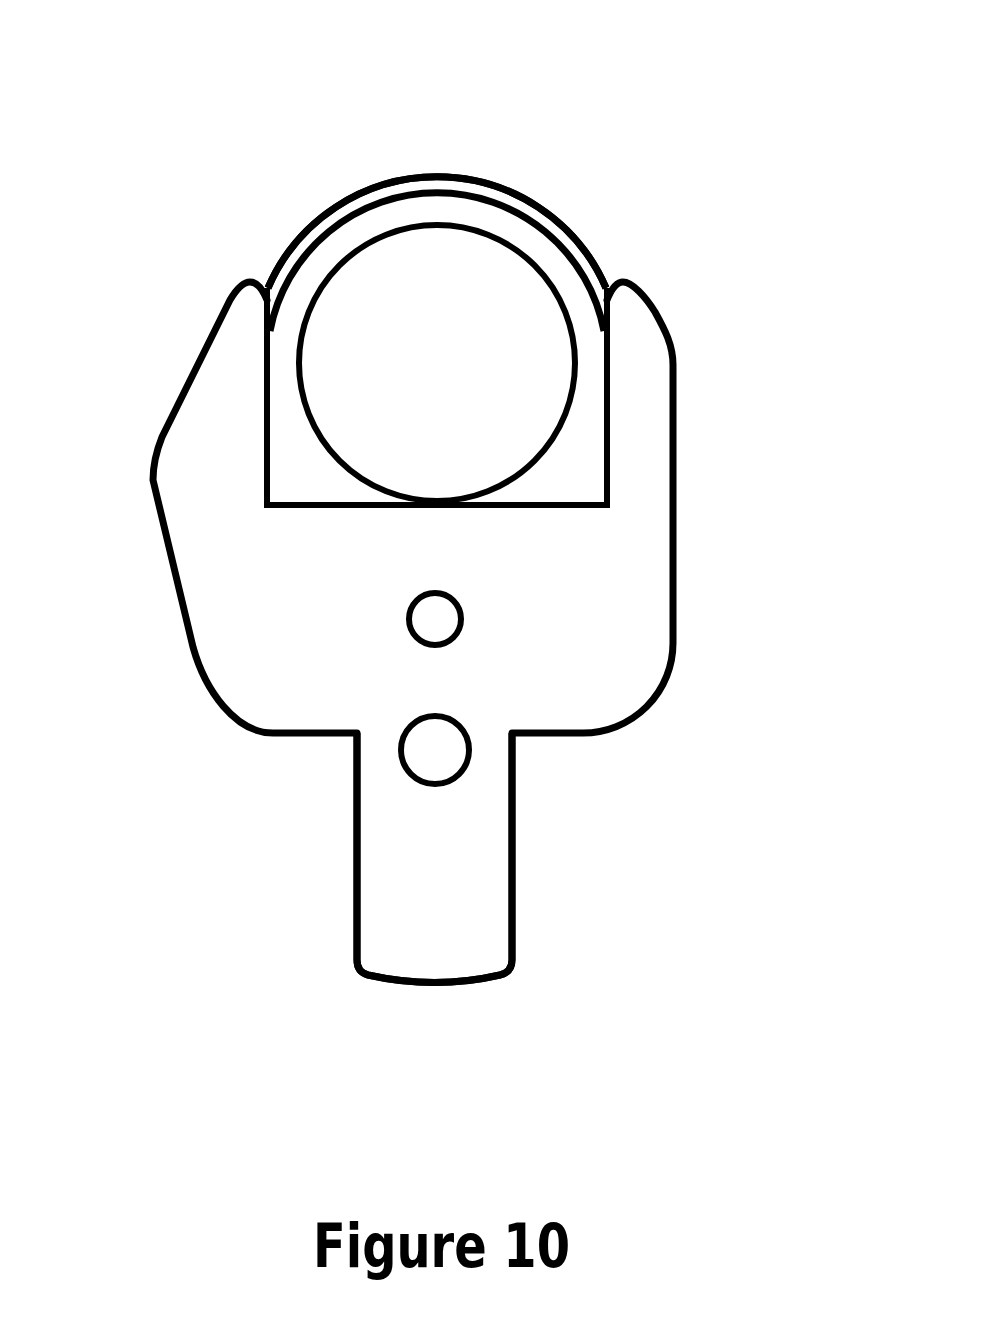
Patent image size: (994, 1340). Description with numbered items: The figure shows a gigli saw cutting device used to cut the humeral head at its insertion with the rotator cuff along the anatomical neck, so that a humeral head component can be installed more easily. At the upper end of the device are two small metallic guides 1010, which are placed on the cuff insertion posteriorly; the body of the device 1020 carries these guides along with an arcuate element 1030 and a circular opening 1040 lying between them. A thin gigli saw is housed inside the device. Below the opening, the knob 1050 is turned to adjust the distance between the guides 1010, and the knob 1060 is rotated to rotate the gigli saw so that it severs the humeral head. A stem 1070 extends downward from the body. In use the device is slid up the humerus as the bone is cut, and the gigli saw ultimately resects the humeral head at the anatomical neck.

The small metallic guides 1010 is at (627, 280).
The housing body 1020 is at (320, 507).
The outer arcuate ring 1030 is at (568, 236).
The circular opening 1040 is at (557, 373).
The knob 1050 is at (455, 621).
The knob 1060 is at (457, 753).
The stem 1070 is at (503, 862).